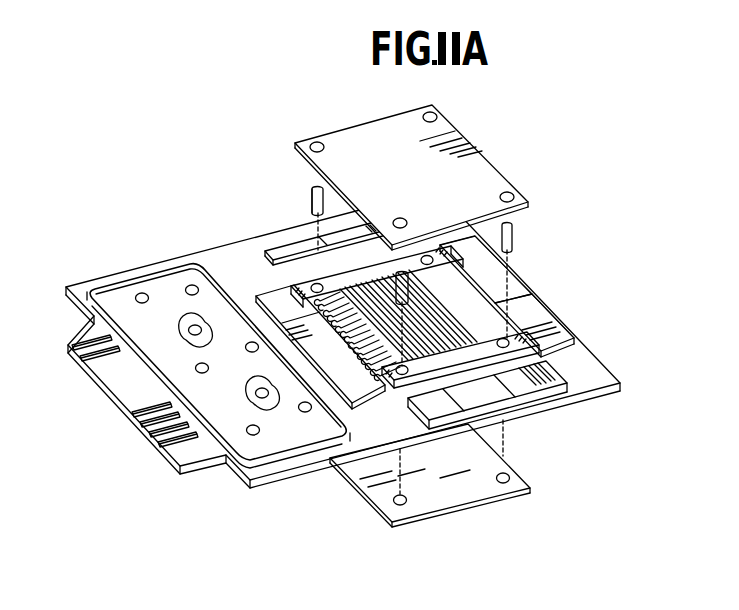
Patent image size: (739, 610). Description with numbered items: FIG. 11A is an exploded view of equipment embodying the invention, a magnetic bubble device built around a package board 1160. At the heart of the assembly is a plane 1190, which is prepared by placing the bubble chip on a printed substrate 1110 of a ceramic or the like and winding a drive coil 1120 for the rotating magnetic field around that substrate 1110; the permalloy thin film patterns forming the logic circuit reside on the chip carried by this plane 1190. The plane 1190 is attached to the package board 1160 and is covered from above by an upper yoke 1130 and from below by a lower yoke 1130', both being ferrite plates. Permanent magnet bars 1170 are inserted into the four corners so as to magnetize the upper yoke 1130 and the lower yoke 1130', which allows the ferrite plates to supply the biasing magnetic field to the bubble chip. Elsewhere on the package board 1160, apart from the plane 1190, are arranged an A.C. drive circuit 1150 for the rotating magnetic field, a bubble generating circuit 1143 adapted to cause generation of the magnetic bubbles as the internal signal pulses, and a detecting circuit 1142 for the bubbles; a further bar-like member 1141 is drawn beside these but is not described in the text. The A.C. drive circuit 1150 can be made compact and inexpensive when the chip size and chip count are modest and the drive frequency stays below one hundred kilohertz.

The upper yoke 1130 is at (416, 177).
The lower yoke 1130' is at (430, 480).
The permanent magnet bar 1170 is at (311, 194).
The first spacer bar 1141 is at (260, 294).
The detecting circuit 1142 is at (568, 340).
The bubble generating circuit 1143 is at (528, 414).
The drive coil 1120 is at (510, 291).
The printed substrate 1110 is at (548, 314).
The plane 1190 is at (572, 262).
The A.C. drive circuit 1150 is at (297, 442).
The package board 1160 is at (207, 462).